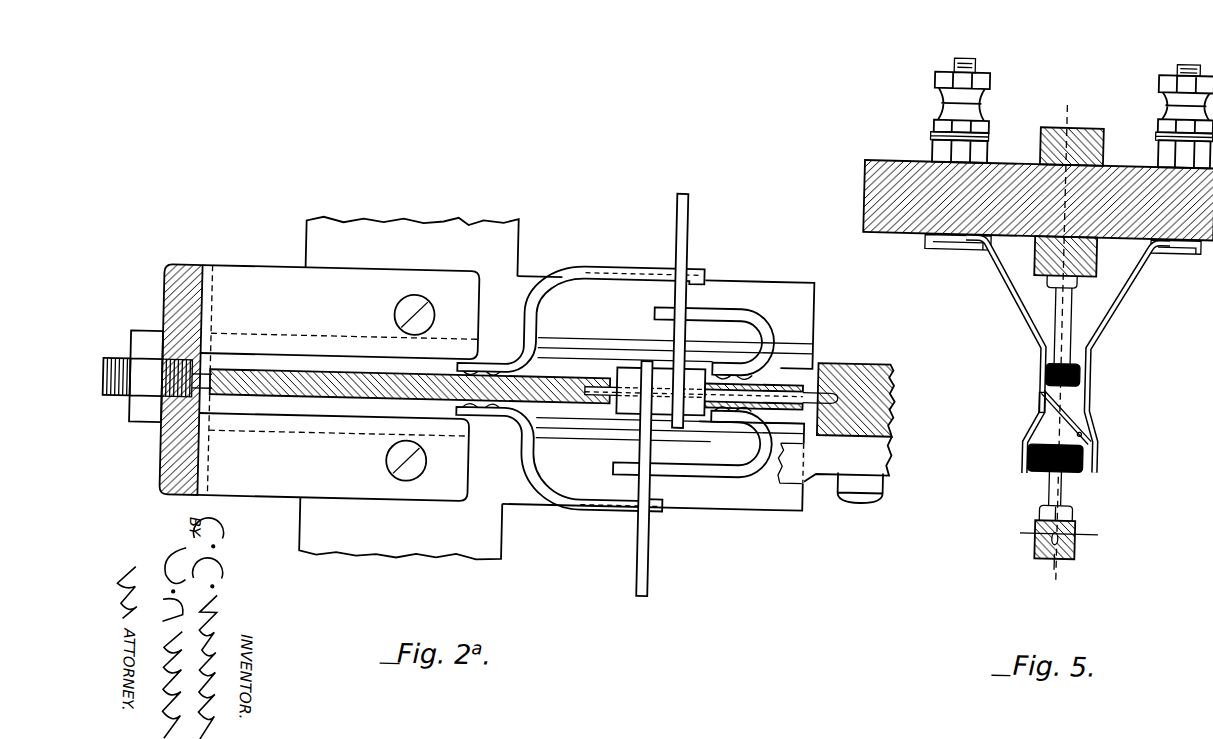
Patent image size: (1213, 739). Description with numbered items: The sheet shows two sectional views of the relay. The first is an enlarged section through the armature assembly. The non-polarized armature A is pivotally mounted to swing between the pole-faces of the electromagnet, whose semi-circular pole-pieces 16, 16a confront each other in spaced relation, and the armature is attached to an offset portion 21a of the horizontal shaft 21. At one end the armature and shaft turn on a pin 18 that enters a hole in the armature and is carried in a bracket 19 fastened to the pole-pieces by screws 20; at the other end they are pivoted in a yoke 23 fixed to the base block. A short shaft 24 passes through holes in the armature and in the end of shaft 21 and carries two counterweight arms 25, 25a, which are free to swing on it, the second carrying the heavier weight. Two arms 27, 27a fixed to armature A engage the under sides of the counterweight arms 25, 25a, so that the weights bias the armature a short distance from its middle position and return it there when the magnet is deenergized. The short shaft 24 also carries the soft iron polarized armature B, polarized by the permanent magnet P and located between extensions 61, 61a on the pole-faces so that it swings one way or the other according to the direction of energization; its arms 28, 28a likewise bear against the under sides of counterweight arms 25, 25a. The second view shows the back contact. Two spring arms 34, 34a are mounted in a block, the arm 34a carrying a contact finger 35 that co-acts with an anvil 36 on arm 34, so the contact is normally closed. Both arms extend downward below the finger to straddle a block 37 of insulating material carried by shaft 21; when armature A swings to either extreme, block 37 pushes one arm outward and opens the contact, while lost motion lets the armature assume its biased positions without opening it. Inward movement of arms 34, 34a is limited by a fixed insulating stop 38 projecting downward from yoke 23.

In FIG. 2A, the pole-piece 16 is at (516, 235).
In FIG. 2A, the pole-piece 16a is at (505, 538).
In FIG. 2A, the pin 18 is at (160, 432).
In FIG. 2A, the bracket 19 is at (215, 264).
In FIG. 2A, the screws 20 is at (396, 303).
In FIG. 2A, the non-polarized armature A is at (268, 368).
In FIG. 2A, the polarized armature B is at (786, 371).
In FIG. 2A, the horizontal shaft 21 is at (870, 349).
In FIG. 5, the horizontal shaft 21 is at (1080, 531).
In FIG. 2A, the offset portion of shaft 21a is at (823, 462).
In FIG. 2A, the short shaft 24 is at (808, 372).
In FIG. 2A, the counterweight arm 25 is at (686, 218).
In FIG. 2A, the counterweight arm 25a is at (652, 562).
In FIG. 2A, the arm 27 is at (530, 302).
In FIG. 2A, the arm 27a is at (535, 476).
In FIG. 2A, the arm 28 is at (748, 303).
In FIG. 2A, the arm 28a is at (742, 462).
In FIG. 2A, the pole-face extension 61 is at (773, 270).
In FIG. 2A, the pole-face extension 61a is at (778, 498).
In FIG. 5, the permanent magnet P is at (1068, 124).
In FIG. 5, the yoke 23 is at (1037, 256).
In FIG. 5, the spring arm 34 is at (1028, 318).
In FIG. 5, the spring arm 34a is at (1130, 266).
In FIG. 5, the contact finger 35 is at (1076, 413).
In FIG. 5, the anvil 36 is at (1046, 389).
In FIG. 5, the insulating block 37 is at (1040, 470).
In FIG. 5, the fixed stop 38 is at (1086, 369).